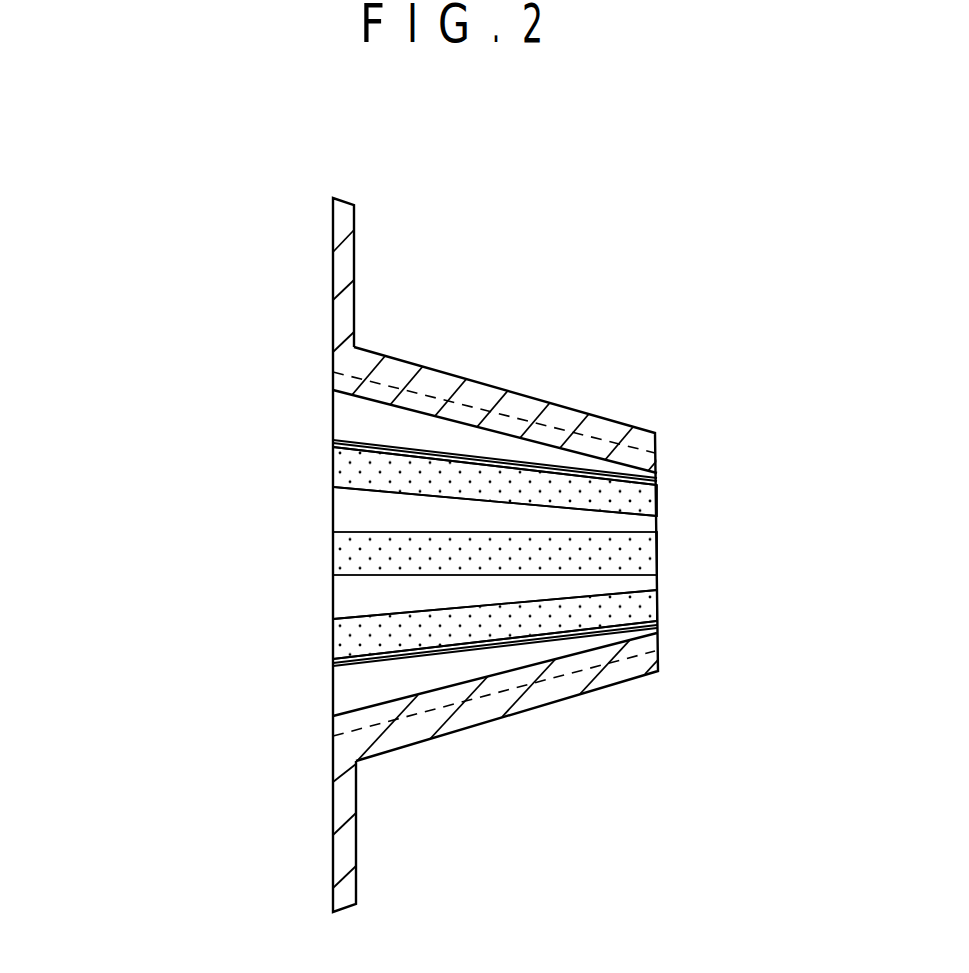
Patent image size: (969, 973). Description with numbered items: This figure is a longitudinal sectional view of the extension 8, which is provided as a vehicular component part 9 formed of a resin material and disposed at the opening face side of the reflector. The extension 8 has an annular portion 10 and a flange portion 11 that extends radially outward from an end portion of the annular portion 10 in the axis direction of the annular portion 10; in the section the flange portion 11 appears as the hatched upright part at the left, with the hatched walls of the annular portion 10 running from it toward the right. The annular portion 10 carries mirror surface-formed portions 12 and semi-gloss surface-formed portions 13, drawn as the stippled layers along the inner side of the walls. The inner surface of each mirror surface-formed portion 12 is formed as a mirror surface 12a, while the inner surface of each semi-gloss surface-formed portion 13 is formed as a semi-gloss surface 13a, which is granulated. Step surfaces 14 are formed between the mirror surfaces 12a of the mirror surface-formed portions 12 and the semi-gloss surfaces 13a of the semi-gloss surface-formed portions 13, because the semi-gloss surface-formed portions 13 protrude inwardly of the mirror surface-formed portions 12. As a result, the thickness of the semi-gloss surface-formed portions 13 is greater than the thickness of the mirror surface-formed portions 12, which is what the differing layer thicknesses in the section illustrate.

The extension 8 is at (770, 173).
The vehicular component part 9 is at (838, 98).
The annular portion 10 is at (475, 395).
The flange portion 11 is at (345, 281).
The mirror surface-formed portion 12 is at (336, 411).
The mirror surface 12a is at (336, 421).
The semi-gloss surface-formed portion 13 is at (336, 374).
The semi-gloss surface 13a is at (363, 403).
The step surface 14 is at (353, 440).